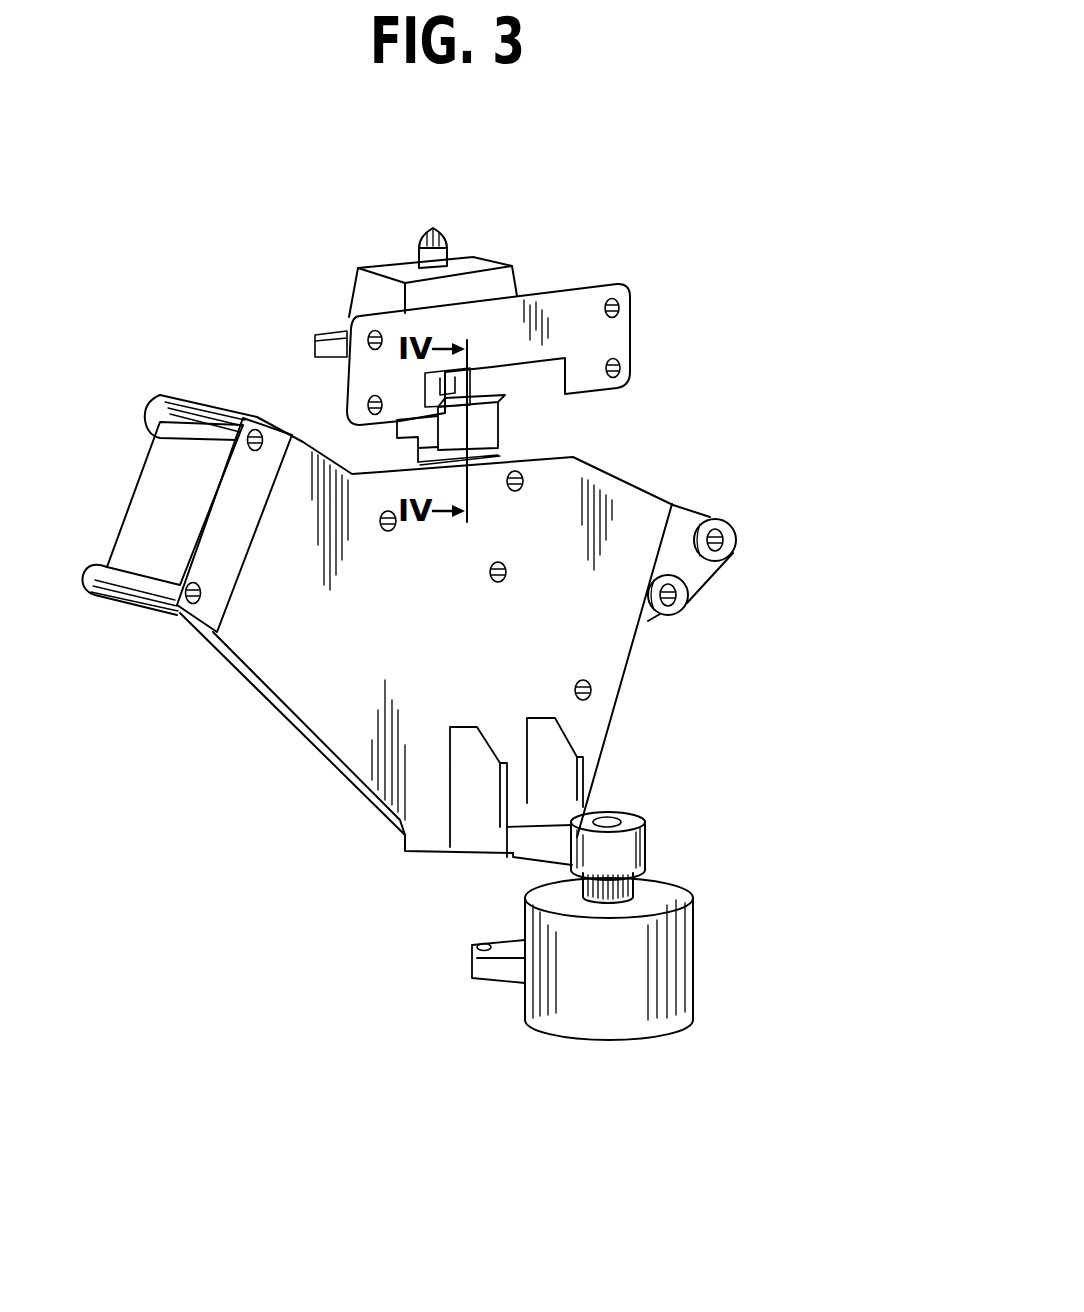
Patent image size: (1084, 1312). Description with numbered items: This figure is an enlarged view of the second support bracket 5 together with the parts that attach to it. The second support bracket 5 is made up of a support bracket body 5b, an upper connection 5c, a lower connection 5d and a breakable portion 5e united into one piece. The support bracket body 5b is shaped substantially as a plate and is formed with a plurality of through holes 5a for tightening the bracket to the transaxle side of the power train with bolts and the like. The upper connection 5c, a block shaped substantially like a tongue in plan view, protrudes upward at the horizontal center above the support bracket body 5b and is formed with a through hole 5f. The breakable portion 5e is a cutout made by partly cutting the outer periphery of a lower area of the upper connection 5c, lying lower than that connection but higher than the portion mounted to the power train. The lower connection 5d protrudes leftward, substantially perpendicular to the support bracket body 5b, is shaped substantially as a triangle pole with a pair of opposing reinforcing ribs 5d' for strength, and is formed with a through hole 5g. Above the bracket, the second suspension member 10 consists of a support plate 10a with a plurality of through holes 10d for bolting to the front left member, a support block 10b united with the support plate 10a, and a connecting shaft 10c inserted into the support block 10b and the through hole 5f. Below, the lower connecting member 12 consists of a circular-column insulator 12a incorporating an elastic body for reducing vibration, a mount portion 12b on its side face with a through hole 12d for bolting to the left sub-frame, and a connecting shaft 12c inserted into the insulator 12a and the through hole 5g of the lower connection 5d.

The second support bracket 5 is at (668, 477).
The through holes 5a is at (397, 522).
The support bracket body 5b is at (585, 641).
The upper connection 5c is at (447, 438).
The lower connection 5d is at (496, 867).
The reinforcing ribs 5d' is at (450, 802).
The breakable portion 5e is at (490, 450).
The through hole 5f is at (458, 380).
The through hole 5g is at (622, 812).
The second suspension member 10 is at (612, 246).
The support plate 10a is at (605, 333).
The support block 10b is at (372, 298).
The connecting shaft 10c is at (446, 256).
The through holes 10d is at (628, 372).
The lower connecting member 12 is at (722, 1003).
The insulator 12a is at (573, 1017).
The mount portion 12b is at (492, 979).
The connecting shaft 12c is at (640, 885).
The through hole 12d is at (478, 947).